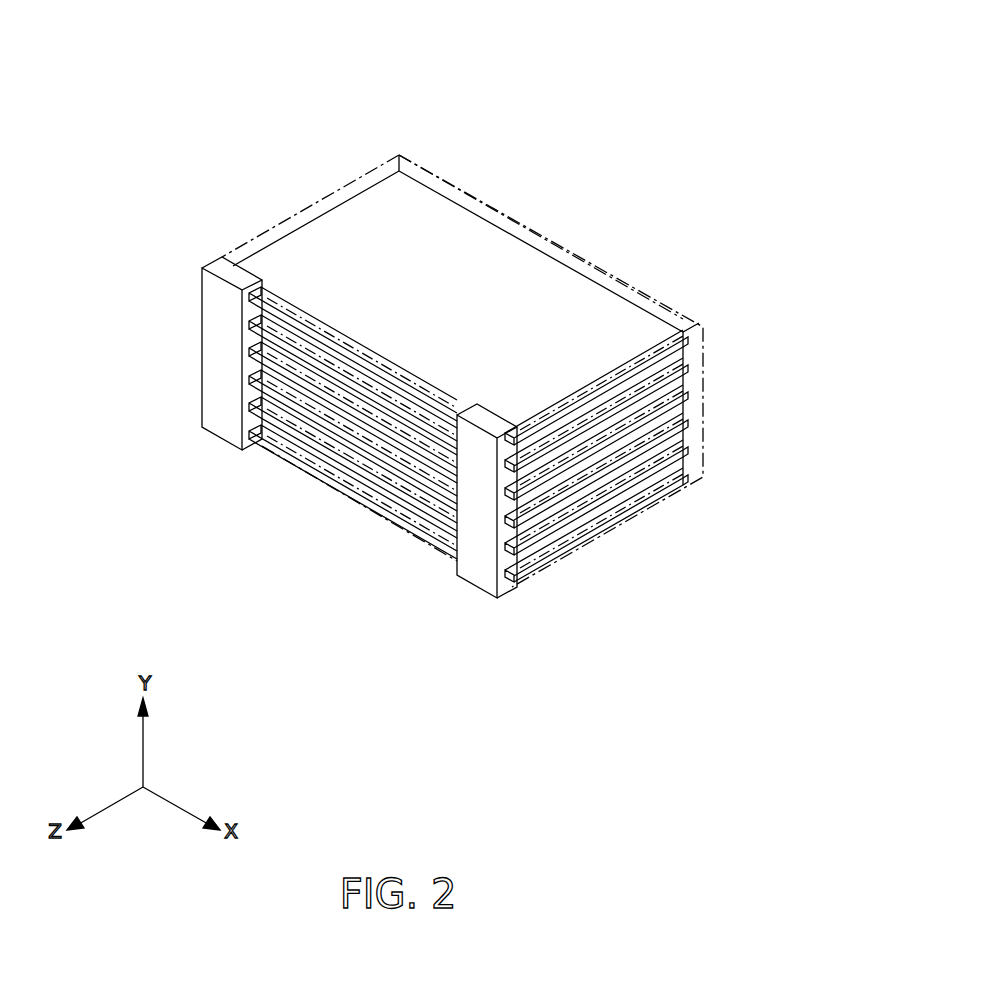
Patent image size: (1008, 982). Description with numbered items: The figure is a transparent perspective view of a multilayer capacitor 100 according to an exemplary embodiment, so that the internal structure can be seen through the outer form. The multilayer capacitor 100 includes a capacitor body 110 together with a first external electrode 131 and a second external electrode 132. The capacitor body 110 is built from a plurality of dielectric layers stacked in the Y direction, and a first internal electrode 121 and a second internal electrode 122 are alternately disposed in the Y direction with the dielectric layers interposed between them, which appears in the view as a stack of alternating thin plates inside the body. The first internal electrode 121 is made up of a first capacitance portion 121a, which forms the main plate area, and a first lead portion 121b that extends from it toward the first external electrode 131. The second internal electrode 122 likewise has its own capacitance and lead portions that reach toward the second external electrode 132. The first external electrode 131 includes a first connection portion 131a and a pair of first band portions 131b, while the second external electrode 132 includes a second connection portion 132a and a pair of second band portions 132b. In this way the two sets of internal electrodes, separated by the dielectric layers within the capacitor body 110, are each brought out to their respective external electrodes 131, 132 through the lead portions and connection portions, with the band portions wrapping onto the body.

The multilayer capacitor 100 is at (660, 38).
The capacitor body 110 is at (538, 247).
The first internal electrode 121 is at (466, 308).
The first capacitance portion 121a is at (421, 248).
The first lead portion 121b is at (255, 312).
The second internal electrode 122 is at (685, 347).
The first external electrode 131 is at (162, 353).
The first connection portion 131a is at (222, 394).
The first band portion 131b is at (232, 272).
The second external electrode 132 is at (399, 501).
The second connection portion 132a is at (480, 553).
The second band portion 132b is at (473, 424).